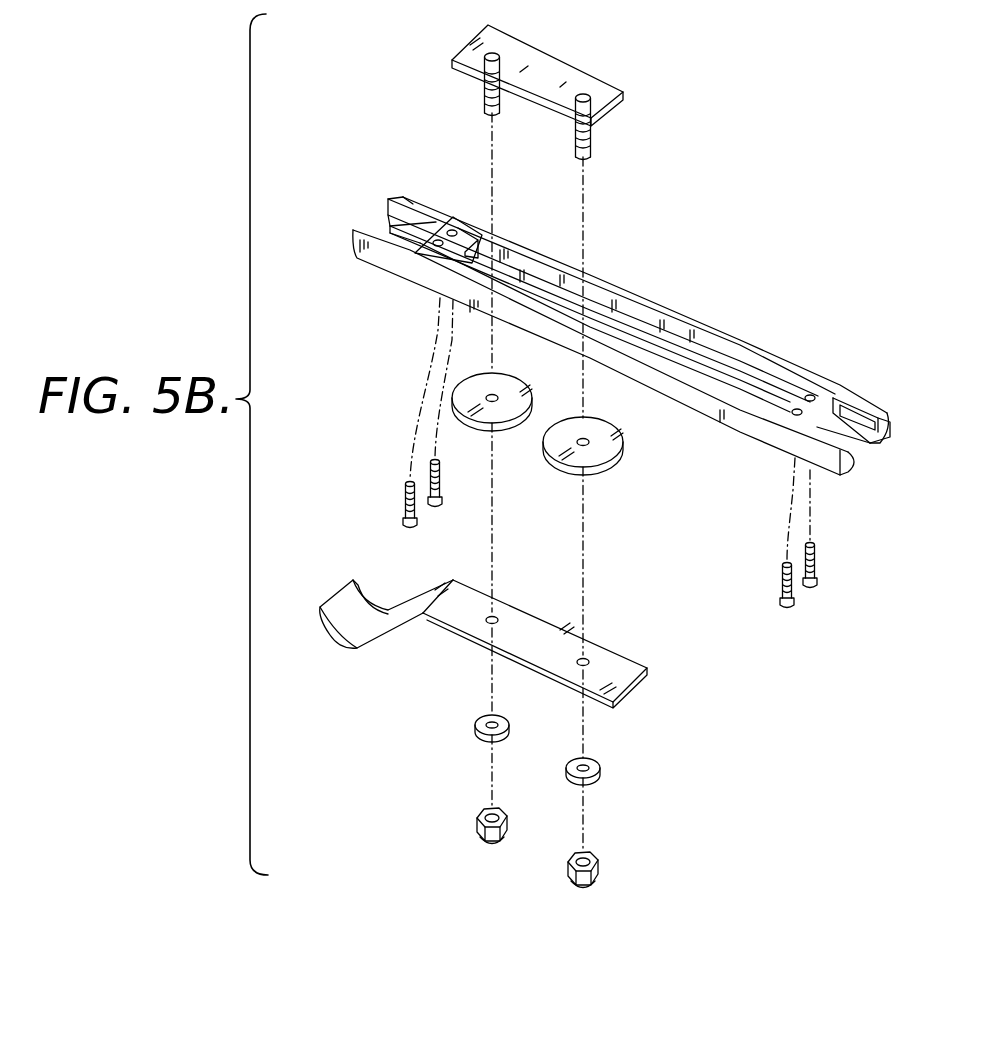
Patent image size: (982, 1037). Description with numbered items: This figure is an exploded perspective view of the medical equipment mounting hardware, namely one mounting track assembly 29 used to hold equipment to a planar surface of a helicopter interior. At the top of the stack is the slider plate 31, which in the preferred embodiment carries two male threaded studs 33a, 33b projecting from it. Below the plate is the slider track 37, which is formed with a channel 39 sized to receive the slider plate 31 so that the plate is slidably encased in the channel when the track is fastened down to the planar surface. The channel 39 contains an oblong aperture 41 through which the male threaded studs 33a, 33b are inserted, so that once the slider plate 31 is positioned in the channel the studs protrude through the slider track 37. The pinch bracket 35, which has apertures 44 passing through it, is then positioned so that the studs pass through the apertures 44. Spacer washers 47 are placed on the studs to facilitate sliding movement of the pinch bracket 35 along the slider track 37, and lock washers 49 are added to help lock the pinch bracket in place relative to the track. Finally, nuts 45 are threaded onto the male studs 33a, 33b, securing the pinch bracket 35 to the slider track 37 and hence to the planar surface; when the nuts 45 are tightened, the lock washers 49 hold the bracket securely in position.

The mounting track assembly 29 is at (774, 183).
The slider plate 31 is at (552, 65).
The male threaded stud 33a is at (592, 142).
The male threaded stud 33b is at (484, 92).
The pinch bracket 35 is at (620, 657).
The slider track 37 is at (820, 387).
The channel 39 is at (432, 257).
The oblong aperture 41 is at (660, 353).
The apertures 44 is at (582, 658).
The nuts 45 is at (568, 872).
The spacer washers 47 is at (570, 427).
The lock washers 49 is at (570, 772).